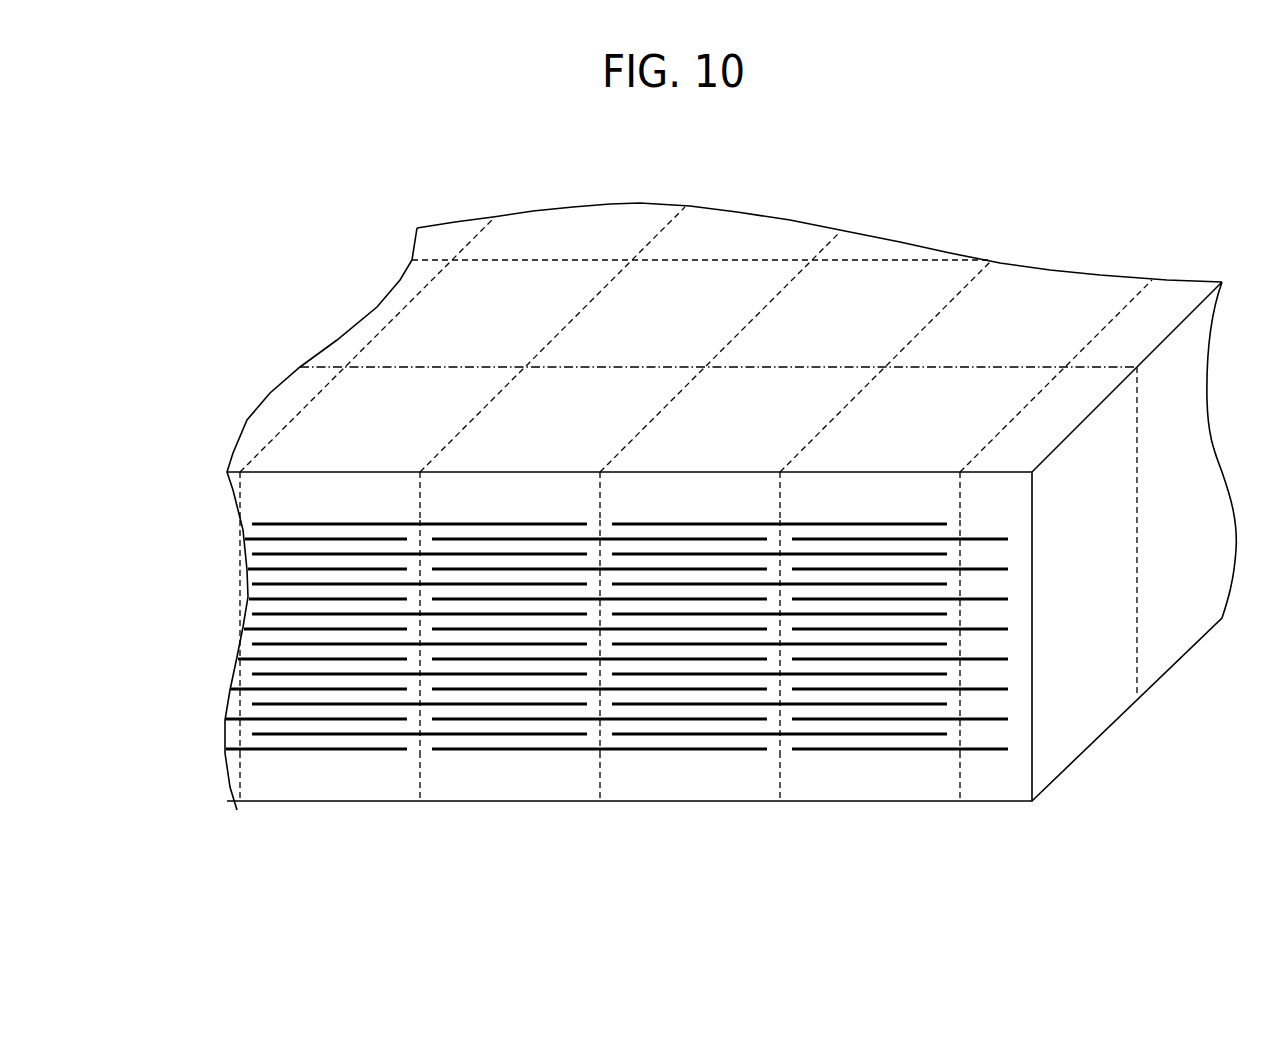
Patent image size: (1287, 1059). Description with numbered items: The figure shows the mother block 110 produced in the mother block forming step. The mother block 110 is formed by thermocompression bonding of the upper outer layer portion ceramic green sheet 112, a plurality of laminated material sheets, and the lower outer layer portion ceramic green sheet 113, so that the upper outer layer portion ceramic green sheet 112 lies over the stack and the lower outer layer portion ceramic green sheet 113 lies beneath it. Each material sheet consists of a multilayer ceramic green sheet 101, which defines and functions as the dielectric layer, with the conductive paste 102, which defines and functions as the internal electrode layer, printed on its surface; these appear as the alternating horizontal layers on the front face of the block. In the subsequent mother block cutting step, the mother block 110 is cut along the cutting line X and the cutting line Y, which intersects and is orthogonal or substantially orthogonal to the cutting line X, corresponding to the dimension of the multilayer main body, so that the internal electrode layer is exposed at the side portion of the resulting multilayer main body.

The mother block 110 is at (678, 300).
The upper outer layer portion ceramic green sheet 112 is at (263, 493).
The lower outer layer portion ceramic green sheet 113 is at (263, 780).
The multilayer ceramic green sheet 101 is at (853, 725).
The conductive paste 102 is at (908, 738).
The cutting line X is at (932, 320).
The cutting line Y is at (983, 367).